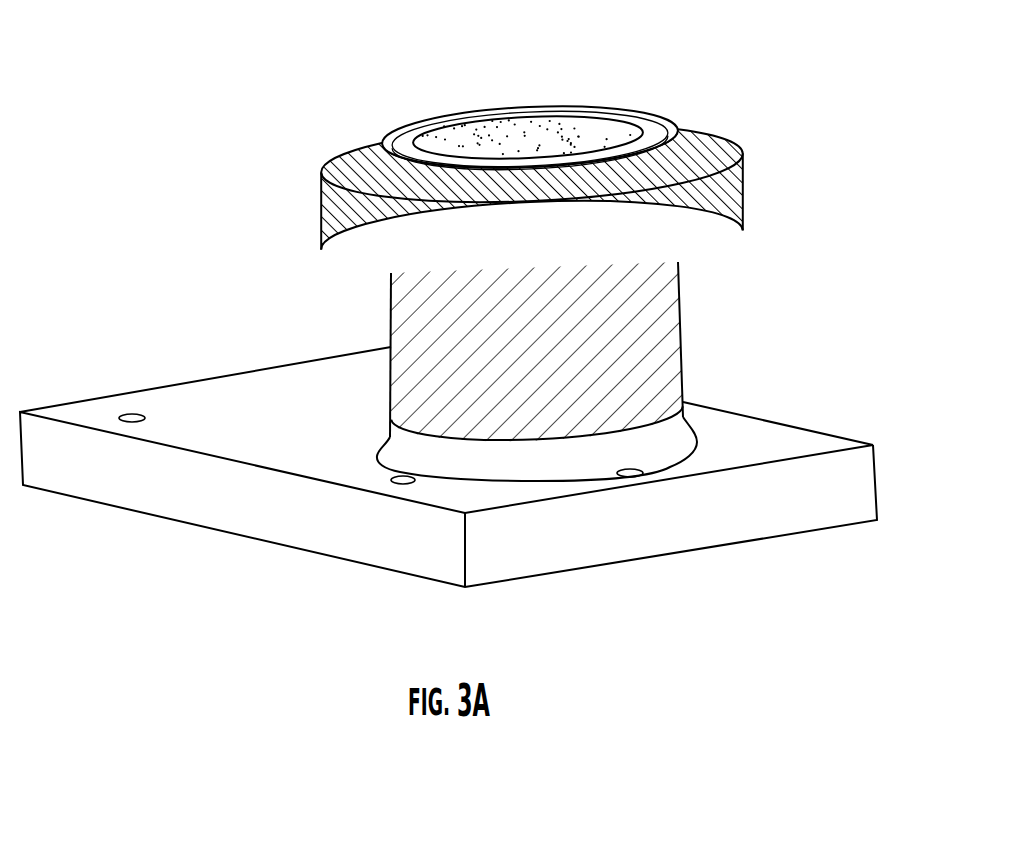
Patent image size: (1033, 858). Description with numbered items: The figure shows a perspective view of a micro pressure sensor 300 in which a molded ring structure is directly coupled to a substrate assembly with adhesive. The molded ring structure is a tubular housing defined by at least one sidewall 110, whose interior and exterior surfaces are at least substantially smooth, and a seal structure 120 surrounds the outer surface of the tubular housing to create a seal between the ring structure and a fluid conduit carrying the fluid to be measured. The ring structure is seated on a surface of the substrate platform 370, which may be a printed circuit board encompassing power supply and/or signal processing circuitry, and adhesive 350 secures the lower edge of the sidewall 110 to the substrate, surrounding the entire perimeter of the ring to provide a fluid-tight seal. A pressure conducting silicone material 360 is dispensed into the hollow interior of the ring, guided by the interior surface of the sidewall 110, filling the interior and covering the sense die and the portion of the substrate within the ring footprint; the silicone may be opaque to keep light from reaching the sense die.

The micro pressure sensor 300 is at (448, 319).
The sidewall 110 is at (680, 333).
The seal structure 120 is at (740, 212).
The adhesive 350 is at (675, 438).
The silicone material 360 is at (503, 127).
The substrate platform 370 is at (820, 530).